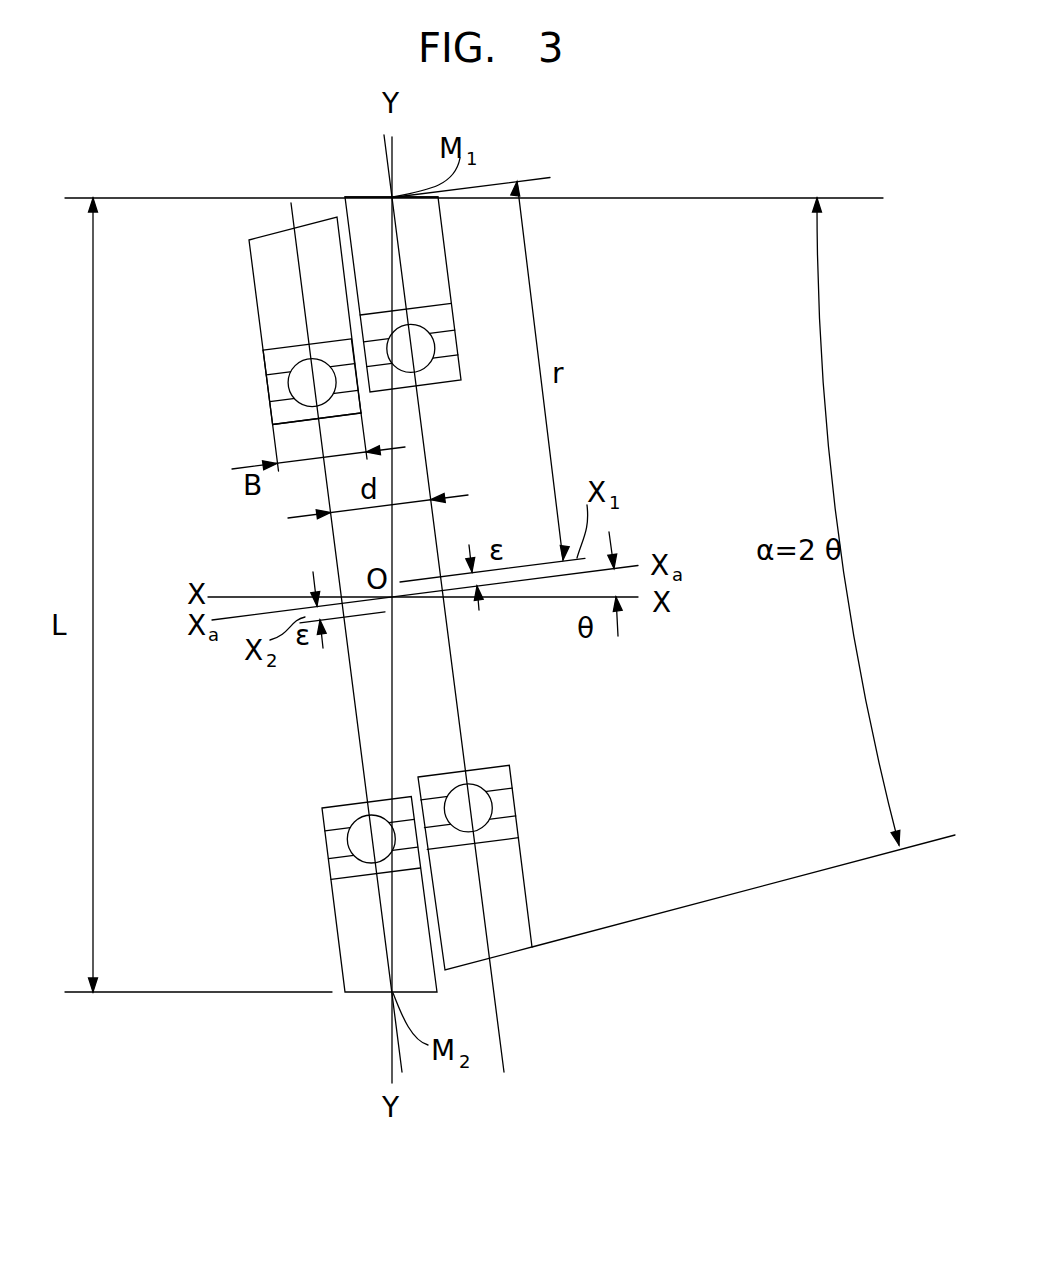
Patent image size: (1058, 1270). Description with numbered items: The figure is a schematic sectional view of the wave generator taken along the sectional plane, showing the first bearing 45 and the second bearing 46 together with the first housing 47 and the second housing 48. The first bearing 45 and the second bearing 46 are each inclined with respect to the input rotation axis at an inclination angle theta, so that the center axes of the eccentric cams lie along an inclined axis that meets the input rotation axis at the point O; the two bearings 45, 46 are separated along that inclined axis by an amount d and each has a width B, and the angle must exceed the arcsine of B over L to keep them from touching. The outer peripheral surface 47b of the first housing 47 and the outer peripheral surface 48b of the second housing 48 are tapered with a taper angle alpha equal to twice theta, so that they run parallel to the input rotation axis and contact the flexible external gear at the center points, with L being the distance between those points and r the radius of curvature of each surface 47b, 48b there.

The first bearing 45 is at (443, 342).
The second bearing 46 is at (273, 388).
The first housing 47 is at (500, 887).
The second housing 48 is at (275, 298).
The outer peripheral surface of the first housing 47b is at (367, 197).
The outer peripheral surface of the second housing 48b is at (370, 993).